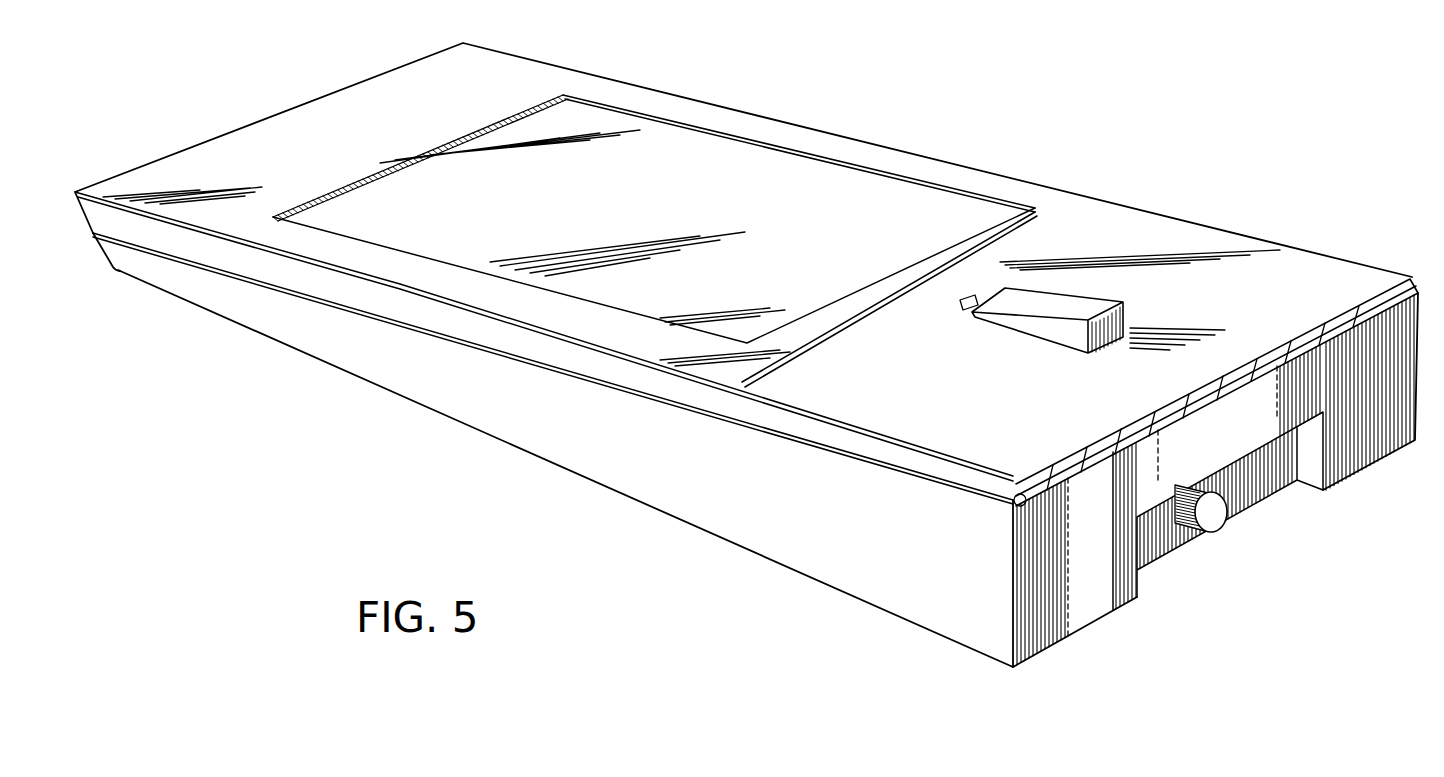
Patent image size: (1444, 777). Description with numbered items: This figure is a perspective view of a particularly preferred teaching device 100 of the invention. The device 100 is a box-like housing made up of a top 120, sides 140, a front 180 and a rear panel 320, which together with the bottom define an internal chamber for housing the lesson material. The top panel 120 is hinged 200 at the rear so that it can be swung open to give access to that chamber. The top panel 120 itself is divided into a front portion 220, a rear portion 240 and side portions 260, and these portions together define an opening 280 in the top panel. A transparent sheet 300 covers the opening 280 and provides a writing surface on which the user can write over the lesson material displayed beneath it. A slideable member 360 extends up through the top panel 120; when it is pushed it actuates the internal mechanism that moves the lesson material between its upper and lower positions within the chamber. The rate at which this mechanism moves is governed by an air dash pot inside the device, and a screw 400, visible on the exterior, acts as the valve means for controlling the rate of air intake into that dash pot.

The device 100 is at (1182, 209).
The top panel 120 is at (382, 103).
The sides 140 is at (648, 492).
The front 180 is at (114, 262).
The hinge 200 is at (1383, 297).
The front portion 220 is at (263, 136).
The rear portion 240 is at (848, 318).
The side portions 260 is at (756, 124).
The opening 280 is at (315, 228).
The transparent sheet 300 is at (607, 135).
The rear panel 320 is at (1101, 594).
The slideable member 360 is at (1094, 298).
The screw 400 is at (1224, 504).